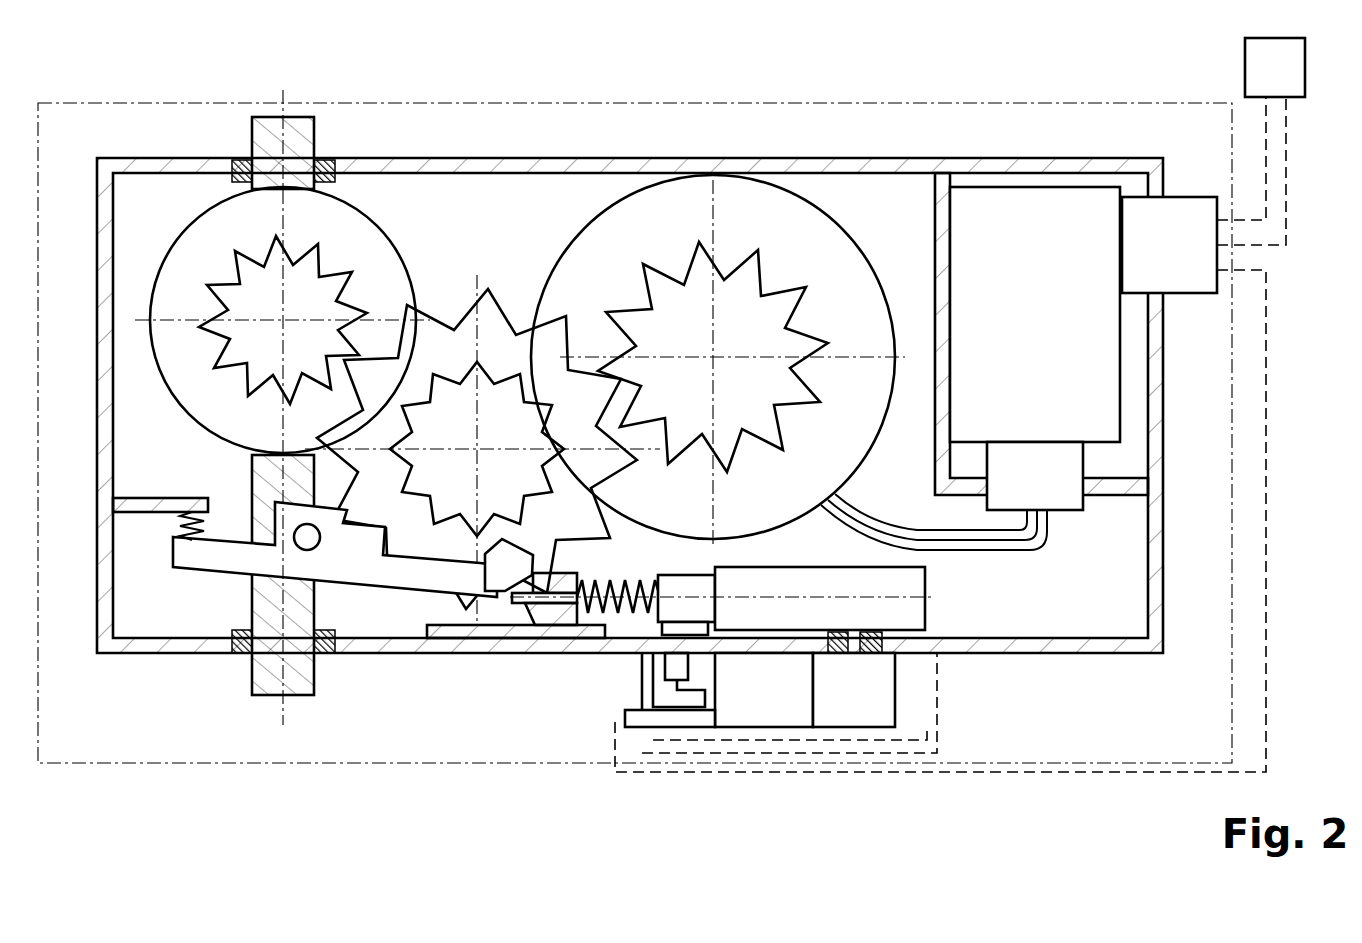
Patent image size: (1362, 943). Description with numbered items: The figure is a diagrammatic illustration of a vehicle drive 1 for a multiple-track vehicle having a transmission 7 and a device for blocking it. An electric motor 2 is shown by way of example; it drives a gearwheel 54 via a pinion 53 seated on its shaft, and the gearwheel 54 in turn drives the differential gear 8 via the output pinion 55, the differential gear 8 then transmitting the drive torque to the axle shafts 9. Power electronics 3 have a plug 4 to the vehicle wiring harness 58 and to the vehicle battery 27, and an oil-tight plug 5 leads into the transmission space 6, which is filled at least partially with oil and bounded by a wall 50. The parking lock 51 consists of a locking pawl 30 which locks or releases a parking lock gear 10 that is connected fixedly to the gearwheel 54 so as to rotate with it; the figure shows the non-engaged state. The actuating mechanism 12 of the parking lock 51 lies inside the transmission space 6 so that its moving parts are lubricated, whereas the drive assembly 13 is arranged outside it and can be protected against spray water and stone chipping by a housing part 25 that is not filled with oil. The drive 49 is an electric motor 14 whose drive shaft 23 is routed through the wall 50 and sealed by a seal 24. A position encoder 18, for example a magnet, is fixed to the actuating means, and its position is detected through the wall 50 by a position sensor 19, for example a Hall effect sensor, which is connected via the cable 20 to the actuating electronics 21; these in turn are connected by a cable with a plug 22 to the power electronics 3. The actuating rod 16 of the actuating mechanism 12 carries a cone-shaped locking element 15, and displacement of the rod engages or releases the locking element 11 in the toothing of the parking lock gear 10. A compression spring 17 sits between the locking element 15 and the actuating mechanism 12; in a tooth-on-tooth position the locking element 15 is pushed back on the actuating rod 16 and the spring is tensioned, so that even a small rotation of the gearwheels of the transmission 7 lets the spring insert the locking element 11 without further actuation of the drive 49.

The vehicle drive 1 is at (1024, 88).
The electric motor 2 is at (840, 245).
The power electronics 3 is at (1100, 393).
The plug 4 is at (1192, 205).
The oil-tight plug 5 is at (1068, 498).
The transmission space 6 is at (1120, 588).
The transmission 7 is at (510, 262).
The differential gear 8 is at (200, 243).
The axle shafts 9 is at (258, 135).
The parking lock gear 10 is at (420, 410).
The locking element 11 is at (505, 553).
The actuating mechanism 12 is at (955, 588).
The drive assembly 13 is at (915, 688).
The electric motor 14 is at (832, 715).
The locking element 15 is at (557, 618).
The actuating rod 16 is at (519, 605).
The compression spring 17 is at (632, 612).
The position encoder 18 is at (700, 628).
The position sensor 19 is at (670, 668).
The cable 20 is at (697, 690).
The actuating electronics 21 is at (765, 715).
The plug 22 is at (635, 728).
The drive shaft 23 is at (855, 655).
The seal 24 is at (875, 655).
The housing part 25 is at (962, 730).
The vehicle battery 27 is at (1259, 84).
The locking pawl 30 is at (203, 555).
The drive 49 is at (965, 713).
The wall 50 is at (1097, 645).
The parking lock 51 is at (360, 625).
The pinion 53 is at (760, 280).
The gearwheel 54 is at (560, 330).
The output pinion 55 is at (318, 300).
The vehicle wiring harness 58 is at (1240, 258).